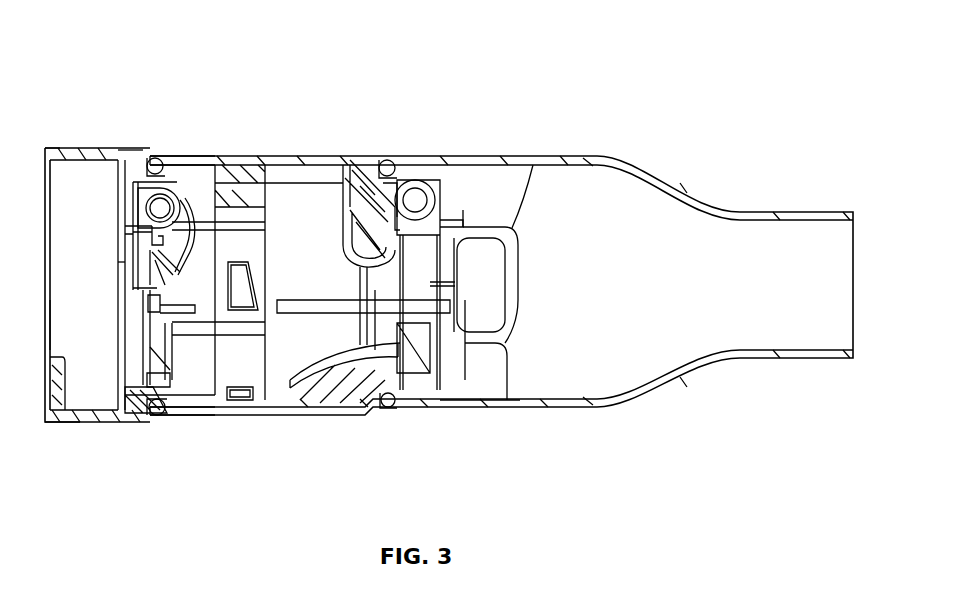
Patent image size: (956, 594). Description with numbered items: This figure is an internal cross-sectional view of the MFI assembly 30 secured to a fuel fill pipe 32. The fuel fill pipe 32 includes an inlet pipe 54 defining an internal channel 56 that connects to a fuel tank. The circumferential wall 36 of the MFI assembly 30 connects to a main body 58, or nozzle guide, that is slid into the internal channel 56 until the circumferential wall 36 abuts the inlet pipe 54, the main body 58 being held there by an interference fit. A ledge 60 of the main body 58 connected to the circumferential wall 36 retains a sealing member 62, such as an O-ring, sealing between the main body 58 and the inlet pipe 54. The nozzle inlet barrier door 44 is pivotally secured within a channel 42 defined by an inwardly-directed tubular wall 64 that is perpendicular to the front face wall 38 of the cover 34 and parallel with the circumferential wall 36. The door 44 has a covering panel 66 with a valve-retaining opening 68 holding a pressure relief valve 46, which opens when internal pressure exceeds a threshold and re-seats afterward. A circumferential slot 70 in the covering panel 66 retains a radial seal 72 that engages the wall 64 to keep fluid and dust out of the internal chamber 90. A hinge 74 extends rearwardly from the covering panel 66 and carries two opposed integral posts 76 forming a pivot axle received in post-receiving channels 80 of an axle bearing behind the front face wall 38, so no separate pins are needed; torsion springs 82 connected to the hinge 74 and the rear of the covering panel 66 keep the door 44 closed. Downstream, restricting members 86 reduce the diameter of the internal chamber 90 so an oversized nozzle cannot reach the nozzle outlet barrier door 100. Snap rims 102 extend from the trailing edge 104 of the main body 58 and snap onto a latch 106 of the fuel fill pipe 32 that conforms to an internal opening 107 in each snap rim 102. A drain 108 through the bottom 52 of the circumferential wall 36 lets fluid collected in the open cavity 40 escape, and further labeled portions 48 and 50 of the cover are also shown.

The MFI assembly 30 is at (58, 52).
The fuel fill pipe 32 is at (668, 180).
The cover 34 is at (128, 148).
The circumferential wall 36 is at (70, 148).
The front face wall 38 is at (115, 200).
The open cavity 40 is at (80, 313).
The channel 42 is at (115, 255).
The nozzle inlet barrier door 44 is at (165, 240).
The pressure relief valve 46 is at (113, 395).
The cap notch 48 is at (53, 380).
The cap top edge 50 is at (45, 157).
The bottom 52 is at (67, 423).
The inlet pipe 54 is at (514, 158).
The internal channel 56 is at (570, 213).
The main body 58 is at (218, 163).
The ledge 60 is at (176, 150).
The sealing member 62 is at (160, 152).
The tubular wall 64 is at (115, 233).
The covering panel 66 is at (213, 367).
The valve-retaining opening 68 is at (178, 290).
The circumferential slot 70 is at (147, 275).
The radial seal 72 is at (145, 250).
The hinge 74 is at (187, 262).
The posts 76 is at (185, 240).
The post-receiving channels 80 is at (118, 148).
The torsion springs 82 is at (170, 258).
The restricting members 86 is at (335, 388).
The internal chamber 90 is at (283, 385).
The nozzle outlet barrier door 100 is at (443, 185).
The snap rims 102 is at (488, 238).
The trailing edge 104 is at (465, 380).
The latch 106 is at (518, 300).
The internal opening 107 is at (533, 158).
The drain 108 is at (100, 421).